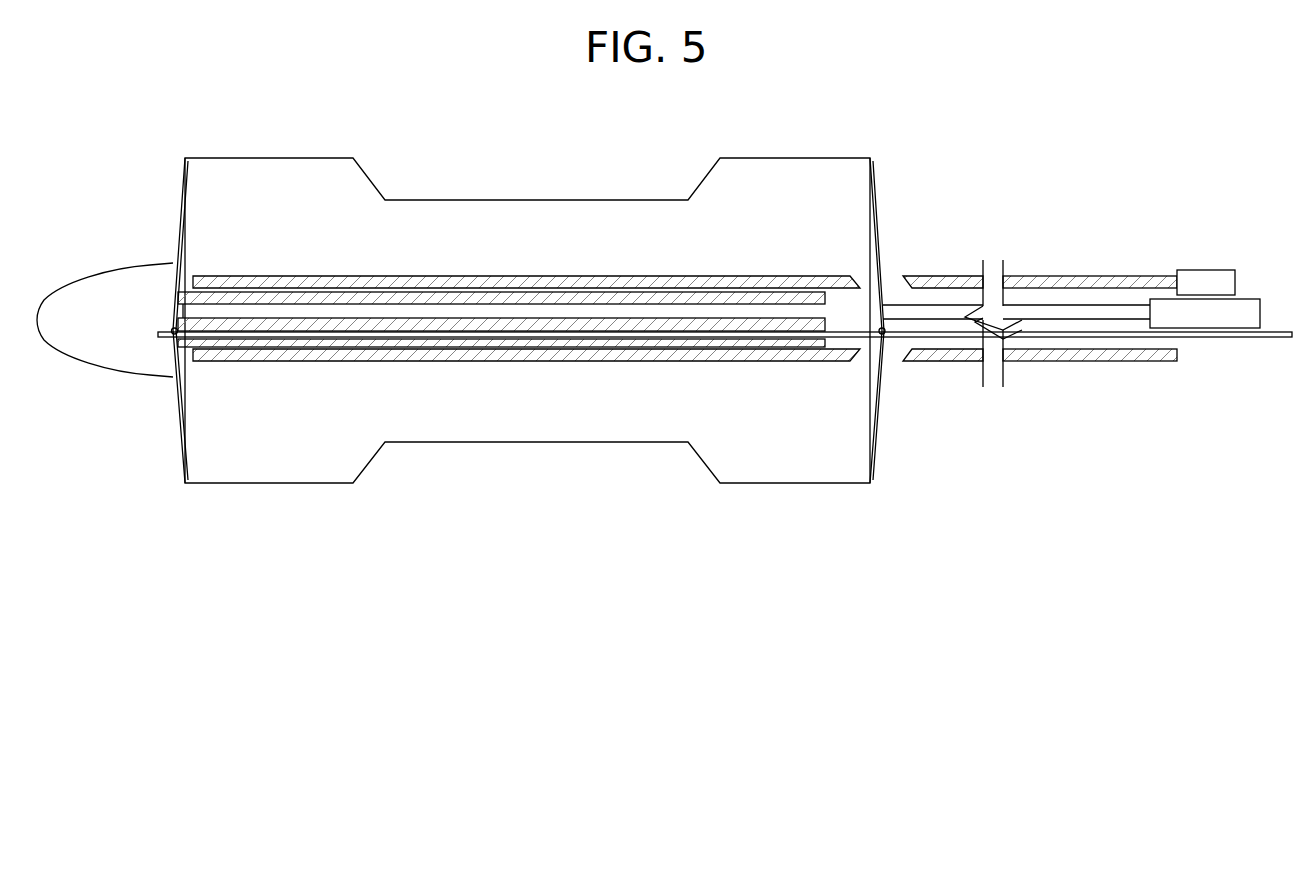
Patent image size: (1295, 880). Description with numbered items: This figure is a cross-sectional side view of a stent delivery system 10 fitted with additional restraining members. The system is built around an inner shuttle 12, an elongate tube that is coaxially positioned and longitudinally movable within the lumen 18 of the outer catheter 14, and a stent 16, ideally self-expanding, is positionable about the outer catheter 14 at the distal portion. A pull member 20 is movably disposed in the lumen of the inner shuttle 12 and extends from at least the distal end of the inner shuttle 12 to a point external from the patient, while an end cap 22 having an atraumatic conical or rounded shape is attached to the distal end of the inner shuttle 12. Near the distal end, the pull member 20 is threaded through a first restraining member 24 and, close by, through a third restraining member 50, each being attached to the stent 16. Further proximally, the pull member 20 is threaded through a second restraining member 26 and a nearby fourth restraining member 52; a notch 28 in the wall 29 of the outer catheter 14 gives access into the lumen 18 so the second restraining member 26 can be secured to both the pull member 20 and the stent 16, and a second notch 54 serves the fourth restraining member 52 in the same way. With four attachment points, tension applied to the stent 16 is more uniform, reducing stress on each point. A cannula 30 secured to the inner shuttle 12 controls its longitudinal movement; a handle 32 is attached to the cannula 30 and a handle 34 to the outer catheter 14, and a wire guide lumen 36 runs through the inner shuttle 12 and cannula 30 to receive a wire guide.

The stent delivery system 10 is at (838, 99).
The inner shuttle 12 is at (600, 362).
The outer catheter 14 is at (540, 276).
The stent 16 is at (298, 157).
The lumen 18 is at (957, 300).
The pull member 20 is at (1055, 340).
The end cap 22 is at (88, 280).
The first restraining member 24 is at (178, 406).
The second restraining member 26 is at (878, 400).
The notch 28 is at (892, 363).
The wall 29 is at (832, 363).
The cannula 30 is at (1070, 300).
The handle 32 is at (1247, 299).
The handle 34 is at (1205, 270).
The wire guide lumen 36 is at (259, 313).
The third restraining member 50 is at (178, 237).
The fourth restraining member 52 is at (876, 225).
The second notch 54 is at (892, 285).